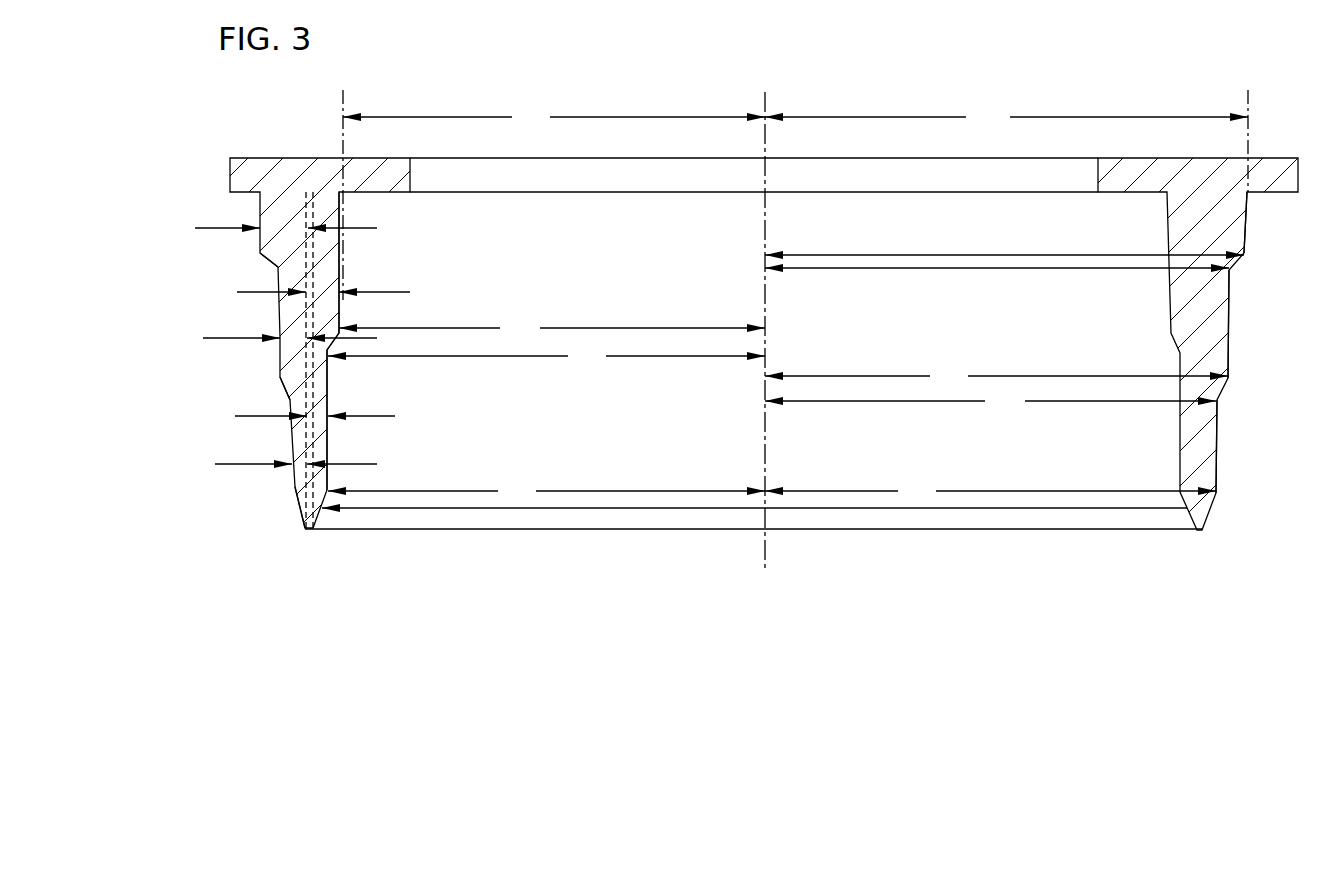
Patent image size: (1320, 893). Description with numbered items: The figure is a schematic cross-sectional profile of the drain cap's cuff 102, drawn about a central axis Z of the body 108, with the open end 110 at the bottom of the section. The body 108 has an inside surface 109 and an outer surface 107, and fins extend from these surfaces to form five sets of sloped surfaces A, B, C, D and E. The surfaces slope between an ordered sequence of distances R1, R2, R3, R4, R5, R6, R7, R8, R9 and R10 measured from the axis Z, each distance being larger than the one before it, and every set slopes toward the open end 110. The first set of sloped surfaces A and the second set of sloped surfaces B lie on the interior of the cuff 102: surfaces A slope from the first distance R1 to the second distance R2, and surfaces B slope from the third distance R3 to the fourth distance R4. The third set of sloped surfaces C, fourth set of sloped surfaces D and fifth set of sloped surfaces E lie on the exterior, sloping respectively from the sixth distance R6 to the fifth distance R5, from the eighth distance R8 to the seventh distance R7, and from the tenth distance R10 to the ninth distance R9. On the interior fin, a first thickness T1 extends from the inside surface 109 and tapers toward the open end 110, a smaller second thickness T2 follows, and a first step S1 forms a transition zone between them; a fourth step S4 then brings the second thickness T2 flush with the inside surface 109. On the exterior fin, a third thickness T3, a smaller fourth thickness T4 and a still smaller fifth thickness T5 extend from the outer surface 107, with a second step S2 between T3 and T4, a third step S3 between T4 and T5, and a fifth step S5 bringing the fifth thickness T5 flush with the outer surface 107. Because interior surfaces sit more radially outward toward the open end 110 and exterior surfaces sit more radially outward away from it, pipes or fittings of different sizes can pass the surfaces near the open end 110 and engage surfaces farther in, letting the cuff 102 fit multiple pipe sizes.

The cuff 102 is at (200, 205).
The outer surface 107 is at (309, 205).
The body 108 is at (306, 200).
The inside surface 109 is at (314, 203).
The open end 110 is at (592, 530).
The axis Z is at (764, 348).
The first set of sloped surfaces A is at (341, 250).
The second set of sloped surfaces B is at (330, 443).
The third set of sloped surfaces C is at (1218, 447).
The fourth set of sloped surfaces D is at (1230, 331).
The fifth set of sloped surfaces E is at (1246, 232).
The first distance R1 is at (554, 119).
The second distance R2 is at (552, 331).
The third distance R3 is at (546, 358).
The fourth distance R4 is at (546, 492).
The fifth distance R5 is at (990, 492).
The sixth distance R6 is at (990, 403).
The seventh distance R7 is at (996, 379).
The eighth distance R8 is at (970, 268).
The ninth distance R9 is at (1045, 256).
The tenth distance R10 is at (1006, 119).
The first thickness T1 is at (311, 293).
The second thickness T2 is at (303, 416).
The third thickness T3 is at (268, 229).
The fourth thickness T4 is at (279, 338).
The fifth thickness T5 is at (283, 464).
The first step S1 is at (335, 344).
The second step S2 is at (276, 268).
The third step S3 is at (283, 392).
The fourth step S4 is at (320, 513).
The fifth step S5 is at (300, 512).